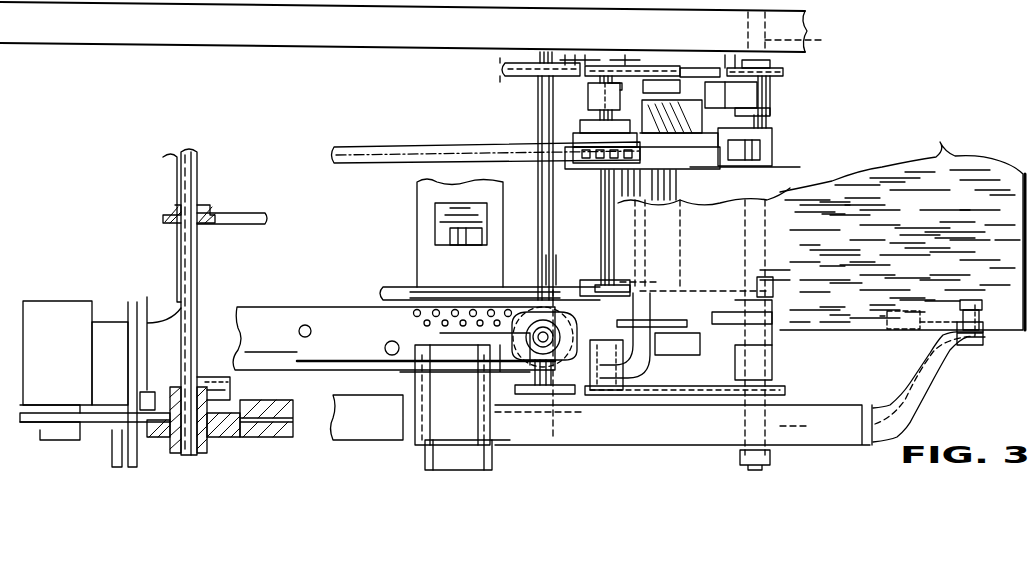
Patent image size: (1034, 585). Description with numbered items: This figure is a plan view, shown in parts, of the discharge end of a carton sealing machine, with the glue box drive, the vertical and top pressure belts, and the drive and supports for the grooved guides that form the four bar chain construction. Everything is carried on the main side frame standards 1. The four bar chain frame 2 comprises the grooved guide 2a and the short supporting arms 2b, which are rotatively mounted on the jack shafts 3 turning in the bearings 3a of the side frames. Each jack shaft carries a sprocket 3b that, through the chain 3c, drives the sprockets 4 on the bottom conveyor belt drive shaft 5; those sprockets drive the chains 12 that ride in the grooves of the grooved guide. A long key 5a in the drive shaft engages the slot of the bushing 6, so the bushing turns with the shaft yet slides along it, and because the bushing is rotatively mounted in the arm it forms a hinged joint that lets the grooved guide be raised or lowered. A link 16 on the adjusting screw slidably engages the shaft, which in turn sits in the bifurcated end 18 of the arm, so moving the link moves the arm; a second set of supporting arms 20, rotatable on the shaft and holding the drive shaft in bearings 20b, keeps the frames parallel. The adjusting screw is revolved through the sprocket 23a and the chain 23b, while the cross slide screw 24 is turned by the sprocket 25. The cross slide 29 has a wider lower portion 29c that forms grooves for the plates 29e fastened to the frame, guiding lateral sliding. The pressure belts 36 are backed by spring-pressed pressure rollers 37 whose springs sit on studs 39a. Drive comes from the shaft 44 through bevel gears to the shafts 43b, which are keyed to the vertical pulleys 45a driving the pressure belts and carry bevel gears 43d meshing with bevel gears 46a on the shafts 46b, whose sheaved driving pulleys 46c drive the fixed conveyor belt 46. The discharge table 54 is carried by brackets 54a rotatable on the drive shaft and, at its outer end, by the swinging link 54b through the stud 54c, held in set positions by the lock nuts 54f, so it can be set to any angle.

The main side frame standards 1 is at (787, 26).
The four bar chain frame 2 is at (395, 168).
The grooved guide 2a is at (452, 153).
The short supporting arms 2b is at (697, 165).
The jack shafts 3 is at (770, 182).
The bearings 3a is at (809, 234).
The sprocket 3b is at (770, 66).
The chain 3c is at (695, 70).
The sprockets 4 is at (620, 66).
The bottom conveyor belt drive shaft 5 is at (572, 190).
The key 5a is at (603, 203).
The bushing 6 is at (590, 120).
The chains 12 is at (372, 150).
The link 16 is at (772, 148).
The bifurcated end 18 is at (762, 136).
The supporting arms 20 is at (740, 98).
The bearings 20b is at (578, 86).
The sprocket 23a is at (570, 412).
The chain 23b is at (636, 390).
The screw 24 is at (485, 230).
The sprocket 25 is at (460, 224).
The base block 29 is at (427, 446).
The lower portion 29c is at (497, 442).
The plates 29e is at (405, 432).
The pressure belts 36 is at (345, 303).
The pressure rollers 37 is at (349, 340).
The studs 39a is at (415, 320).
The shafts 43b is at (543, 338).
The bevel gears 43d is at (512, 345).
The shaft 44 is at (540, 88).
The vertical pulleys 45a is at (690, 333).
The fixed conveyor belt 46 is at (418, 290).
The bevel gears 46a is at (610, 292).
The shafts 46b is at (555, 245).
The driving pulleys 46c is at (525, 290).
The table 54 is at (940, 153).
The brackets 54a is at (687, 294).
The swinging link 54b is at (930, 320).
The stud 54c is at (968, 347).
The nut 54f is at (975, 302).